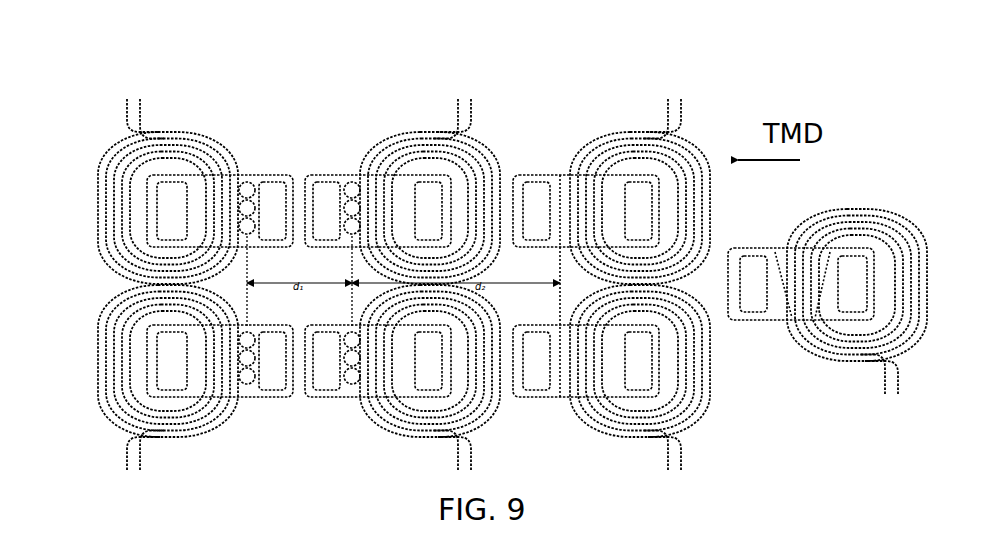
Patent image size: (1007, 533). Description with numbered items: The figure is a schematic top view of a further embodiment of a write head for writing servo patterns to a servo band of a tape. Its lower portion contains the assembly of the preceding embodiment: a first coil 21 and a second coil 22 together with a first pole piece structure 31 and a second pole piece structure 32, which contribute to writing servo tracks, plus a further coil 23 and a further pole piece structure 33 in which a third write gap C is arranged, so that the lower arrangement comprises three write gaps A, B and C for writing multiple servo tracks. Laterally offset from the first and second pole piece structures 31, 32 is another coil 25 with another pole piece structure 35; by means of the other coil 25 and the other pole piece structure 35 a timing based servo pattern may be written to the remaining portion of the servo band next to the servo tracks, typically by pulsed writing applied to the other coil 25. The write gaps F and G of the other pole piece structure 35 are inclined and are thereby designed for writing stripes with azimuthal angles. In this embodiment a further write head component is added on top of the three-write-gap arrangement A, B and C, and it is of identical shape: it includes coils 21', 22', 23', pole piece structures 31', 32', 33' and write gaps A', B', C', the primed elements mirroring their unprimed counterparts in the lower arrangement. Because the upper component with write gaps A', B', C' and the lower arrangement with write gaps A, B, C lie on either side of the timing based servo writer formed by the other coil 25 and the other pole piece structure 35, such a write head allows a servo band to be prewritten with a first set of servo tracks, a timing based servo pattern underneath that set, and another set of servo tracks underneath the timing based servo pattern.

The coil 21' is at (640, 168).
The coil 22' is at (430, 163).
The coil 23' is at (179, 153).
The pole piece structure 31' is at (628, 174).
The pole piece structure 32' is at (401, 163).
The pole piece structure 33' is at (220, 166).
The write gap A' is at (585, 194).
The write gap B' is at (373, 205).
The write gap C' is at (284, 204).
The first coil 21 is at (640, 405).
The second coil 22 is at (426, 405).
The further coil 23 is at (168, 405).
The first pole piece structure 31 is at (586, 391).
The second pole piece structure 32 is at (378, 405).
The further pole piece structure 33 is at (220, 414).
The write gap A is at (544, 408).
The write gap B is at (337, 414).
The third write gap C is at (232, 419).
The other coil 25 is at (835, 225).
The other pole piece structure 35 is at (800, 307).
The write gap F is at (775, 260).
The write gap G is at (830, 260).